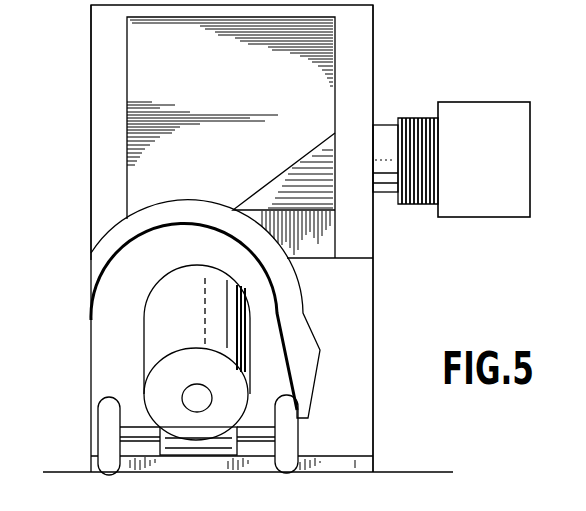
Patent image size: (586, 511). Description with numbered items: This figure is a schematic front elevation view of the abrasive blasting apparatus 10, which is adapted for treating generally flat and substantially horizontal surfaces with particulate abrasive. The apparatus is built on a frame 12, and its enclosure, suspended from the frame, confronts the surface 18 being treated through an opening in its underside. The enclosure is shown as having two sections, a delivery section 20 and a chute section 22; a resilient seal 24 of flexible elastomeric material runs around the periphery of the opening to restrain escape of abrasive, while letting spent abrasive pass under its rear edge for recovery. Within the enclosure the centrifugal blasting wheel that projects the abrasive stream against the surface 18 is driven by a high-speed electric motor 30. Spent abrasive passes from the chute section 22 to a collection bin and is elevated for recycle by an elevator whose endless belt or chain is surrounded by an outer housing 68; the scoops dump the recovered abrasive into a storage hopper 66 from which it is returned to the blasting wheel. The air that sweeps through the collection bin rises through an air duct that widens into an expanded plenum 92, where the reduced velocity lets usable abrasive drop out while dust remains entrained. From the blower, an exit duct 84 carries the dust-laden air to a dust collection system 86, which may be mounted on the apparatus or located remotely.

The abrasive blasting apparatus 10 is at (72, 119).
The frame 12 is at (205, 455).
The surface 18 is at (402, 472).
The delivery section 20 is at (97, 338).
The chute section 22 is at (373, 350).
The resilient seal 24 is at (91, 460).
The high-speed electric motor 30 is at (145, 306).
The storage hopper 66 is at (335, 62).
The outer housing 68 is at (91, 28).
The exit duct 84 is at (384, 125).
The dust collection system 86 is at (483, 102).
The expanded plenum 92 is at (324, 250).